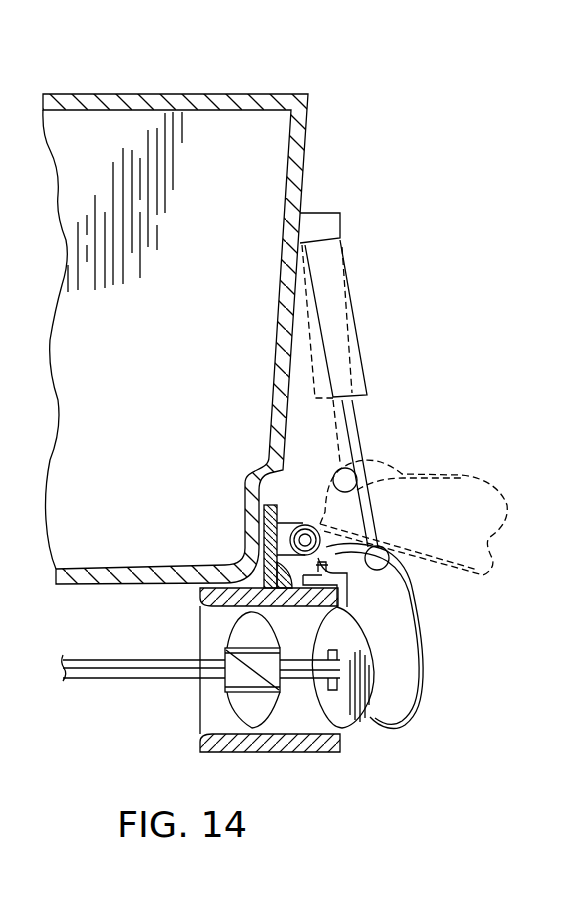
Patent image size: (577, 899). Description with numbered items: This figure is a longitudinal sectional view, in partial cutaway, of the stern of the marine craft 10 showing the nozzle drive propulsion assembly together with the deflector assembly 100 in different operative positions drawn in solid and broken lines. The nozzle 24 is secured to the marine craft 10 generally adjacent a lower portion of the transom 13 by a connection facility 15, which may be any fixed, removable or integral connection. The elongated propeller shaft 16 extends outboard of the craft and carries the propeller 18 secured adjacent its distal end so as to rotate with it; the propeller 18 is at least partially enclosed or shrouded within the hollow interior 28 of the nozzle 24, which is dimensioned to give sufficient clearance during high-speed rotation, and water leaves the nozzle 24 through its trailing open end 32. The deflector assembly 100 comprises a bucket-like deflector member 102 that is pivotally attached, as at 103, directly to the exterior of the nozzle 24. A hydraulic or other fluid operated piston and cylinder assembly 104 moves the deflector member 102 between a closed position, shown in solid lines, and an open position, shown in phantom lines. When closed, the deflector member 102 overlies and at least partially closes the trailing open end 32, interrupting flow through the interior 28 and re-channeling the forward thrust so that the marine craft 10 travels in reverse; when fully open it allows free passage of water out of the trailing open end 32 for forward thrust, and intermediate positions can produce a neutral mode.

The marine craft 10 is at (266, 72).
The piston and cylinder assembly 104 is at (378, 364).
The deflector member 102 is at (462, 475).
The pivotal attachment 103 is at (262, 508).
The connection facility 15 is at (262, 540).
The transom 13 is at (259, 493).
The deflector assembly 100 is at (448, 604).
The nozzle 24 is at (244, 715).
The hollow interior 28 is at (210, 637).
The trailing open end 32 is at (348, 740).
The propeller shaft 16 is at (78, 667).
The propeller 18 is at (248, 705).